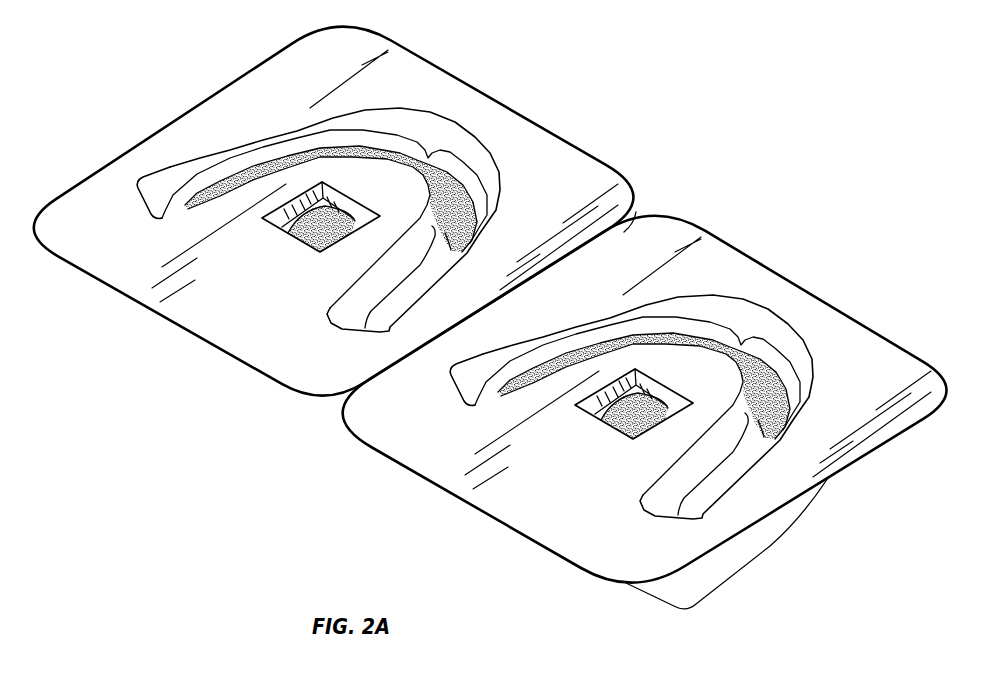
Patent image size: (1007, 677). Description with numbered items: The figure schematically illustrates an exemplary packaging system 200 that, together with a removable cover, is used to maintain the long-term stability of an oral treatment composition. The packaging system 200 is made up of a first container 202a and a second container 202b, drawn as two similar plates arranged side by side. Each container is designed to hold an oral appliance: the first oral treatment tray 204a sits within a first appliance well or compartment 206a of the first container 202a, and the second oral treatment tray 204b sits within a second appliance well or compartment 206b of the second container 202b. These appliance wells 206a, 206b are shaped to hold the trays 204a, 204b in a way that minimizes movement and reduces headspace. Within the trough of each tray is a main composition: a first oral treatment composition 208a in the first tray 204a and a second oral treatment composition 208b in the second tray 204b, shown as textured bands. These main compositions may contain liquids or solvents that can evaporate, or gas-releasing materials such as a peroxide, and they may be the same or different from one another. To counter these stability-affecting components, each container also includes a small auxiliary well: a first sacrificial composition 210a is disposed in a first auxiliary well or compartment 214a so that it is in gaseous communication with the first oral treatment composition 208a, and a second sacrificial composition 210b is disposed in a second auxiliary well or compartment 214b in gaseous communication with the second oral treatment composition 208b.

The packaging system 200 is at (700, 72).
The first container 202a is at (110, 174).
The second container 202b is at (387, 413).
The first oral appliance 204a is at (295, 143).
The second oral appliance 204b is at (683, 325).
The first appliance well 206a is at (163, 182).
The second appliance well 206b is at (680, 480).
The first oral treatment composition 208a is at (440, 180).
The second oral treatment composition 208b is at (775, 382).
The first sacrificial composition 210a is at (300, 243).
The second sacrificial composition 210b is at (613, 430).
The first auxiliary well 214a is at (290, 196).
The second auxiliary well 214b is at (603, 383).